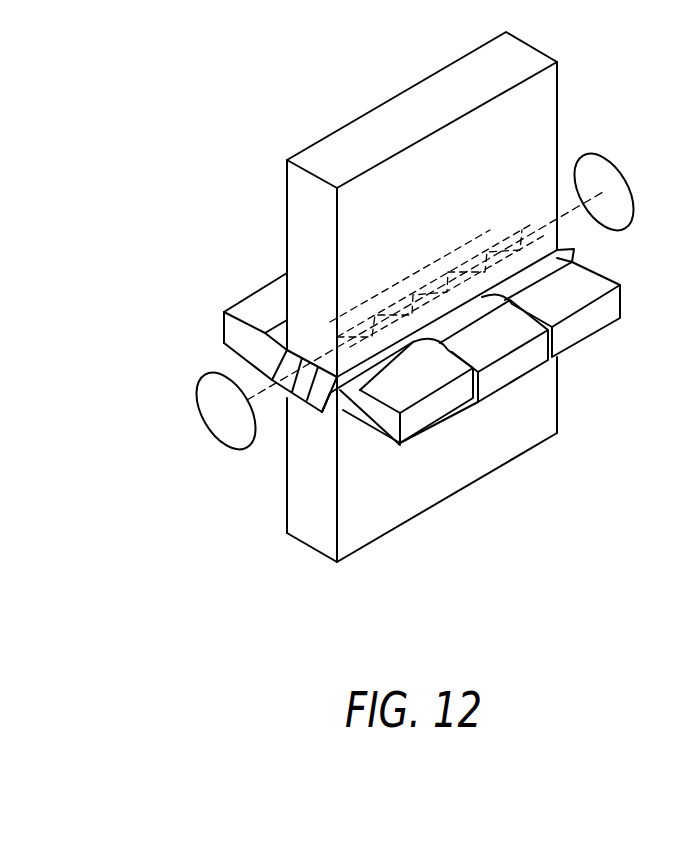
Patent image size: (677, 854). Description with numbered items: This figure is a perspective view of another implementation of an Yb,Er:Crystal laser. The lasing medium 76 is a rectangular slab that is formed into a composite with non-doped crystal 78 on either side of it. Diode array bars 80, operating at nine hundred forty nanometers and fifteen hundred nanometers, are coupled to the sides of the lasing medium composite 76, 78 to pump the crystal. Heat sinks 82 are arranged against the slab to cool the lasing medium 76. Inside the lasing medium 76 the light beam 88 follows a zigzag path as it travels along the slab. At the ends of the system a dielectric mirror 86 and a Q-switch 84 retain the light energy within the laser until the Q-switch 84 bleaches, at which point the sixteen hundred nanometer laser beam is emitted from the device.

The lasing medium 76 is at (288, 412).
The non-doped crystal 78 is at (274, 368).
The diode array bars 80 is at (255, 292).
The heat sinks 82 is at (396, 95).
The Q-switch 84 is at (197, 393).
The dielectric mirror 86 is at (623, 170).
The light beam 88 is at (413, 297).